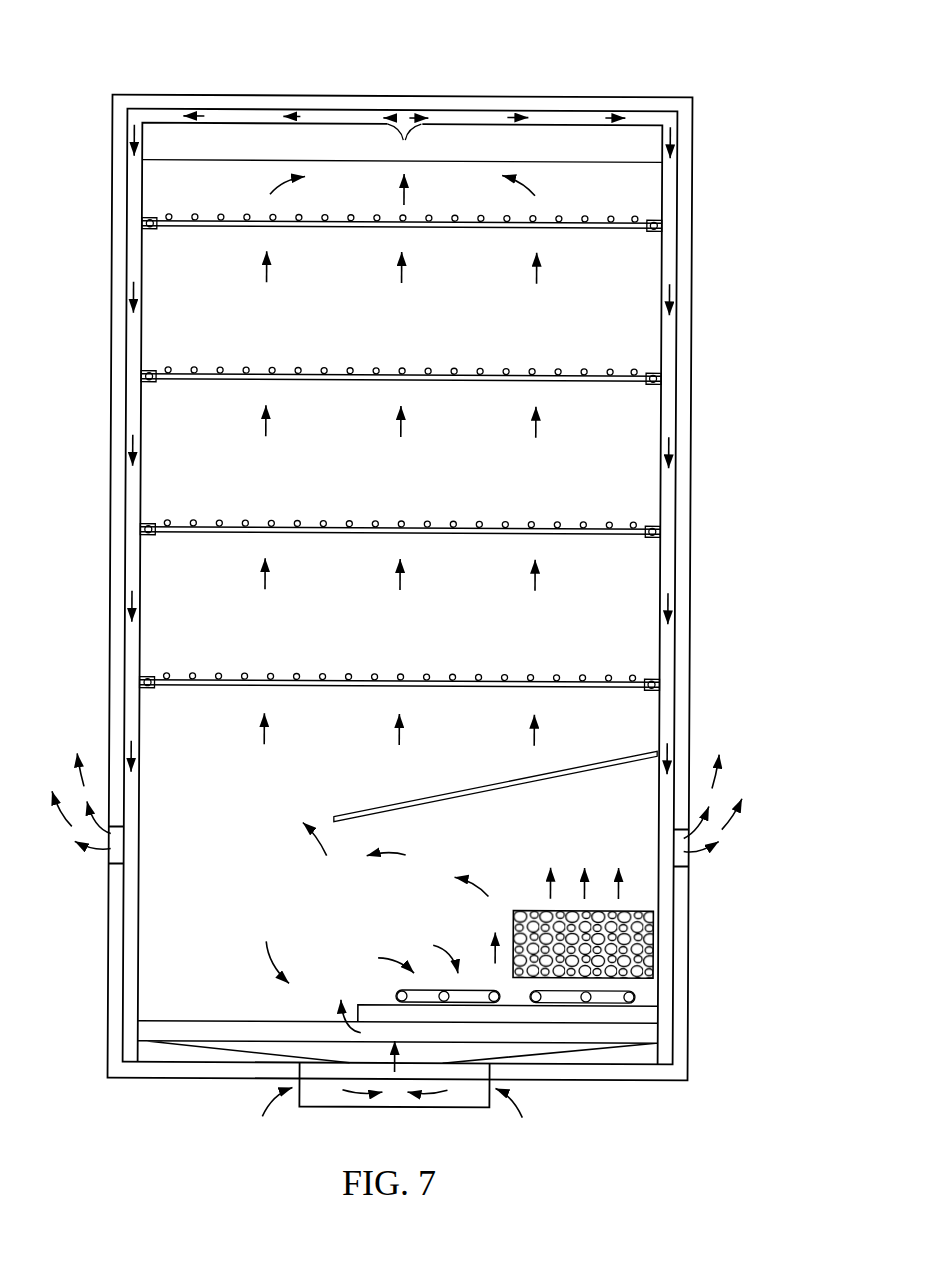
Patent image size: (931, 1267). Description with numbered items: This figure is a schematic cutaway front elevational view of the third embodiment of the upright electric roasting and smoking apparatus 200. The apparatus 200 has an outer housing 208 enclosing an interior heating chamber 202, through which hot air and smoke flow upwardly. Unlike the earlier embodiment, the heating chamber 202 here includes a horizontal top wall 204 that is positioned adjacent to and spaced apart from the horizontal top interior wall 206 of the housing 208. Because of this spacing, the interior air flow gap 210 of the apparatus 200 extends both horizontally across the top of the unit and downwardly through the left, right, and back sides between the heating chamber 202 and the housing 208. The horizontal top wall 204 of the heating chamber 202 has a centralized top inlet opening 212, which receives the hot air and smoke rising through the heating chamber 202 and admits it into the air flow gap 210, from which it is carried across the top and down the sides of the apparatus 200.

The upright electric roasting and smoking apparatus 200 is at (401, 563).
The interior heating chamber 202 is at (423, 495).
The horizontal top wall 204 is at (578, 127).
The horizontal top interior wall 206 is at (245, 108).
The housing 208 is at (692, 333).
The interior air flow gap 210 is at (225, 117).
The centralized top inlet opening 212 is at (388, 125).